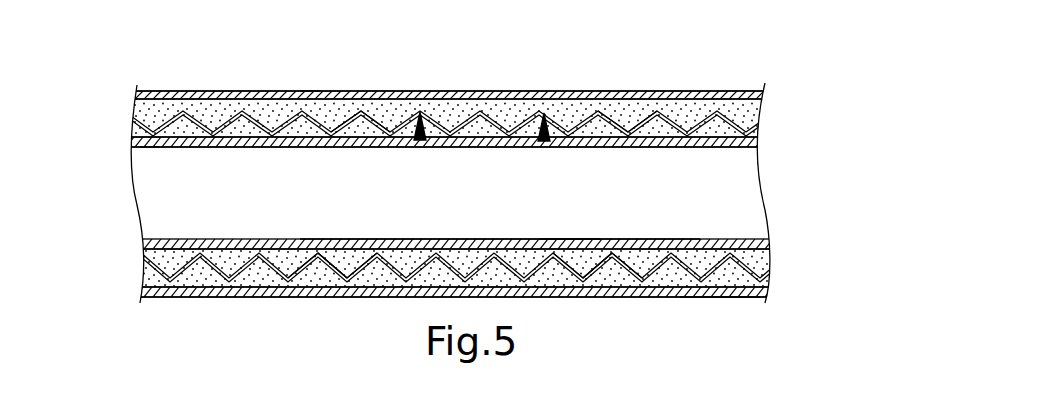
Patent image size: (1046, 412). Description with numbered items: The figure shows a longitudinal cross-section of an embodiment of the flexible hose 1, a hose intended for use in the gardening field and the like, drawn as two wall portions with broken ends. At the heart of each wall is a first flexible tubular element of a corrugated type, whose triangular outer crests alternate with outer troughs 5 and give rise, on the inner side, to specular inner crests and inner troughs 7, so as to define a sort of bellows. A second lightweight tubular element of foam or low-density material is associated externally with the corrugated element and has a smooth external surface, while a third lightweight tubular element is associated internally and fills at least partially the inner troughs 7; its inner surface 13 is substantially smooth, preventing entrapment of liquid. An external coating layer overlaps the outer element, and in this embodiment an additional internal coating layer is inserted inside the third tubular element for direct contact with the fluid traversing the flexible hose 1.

The flexible hose 1 is at (781, 340).
The troughs 5 is at (320, 283).
The inner troughs 7 is at (415, 138).
The inner surface 13 is at (422, 229).